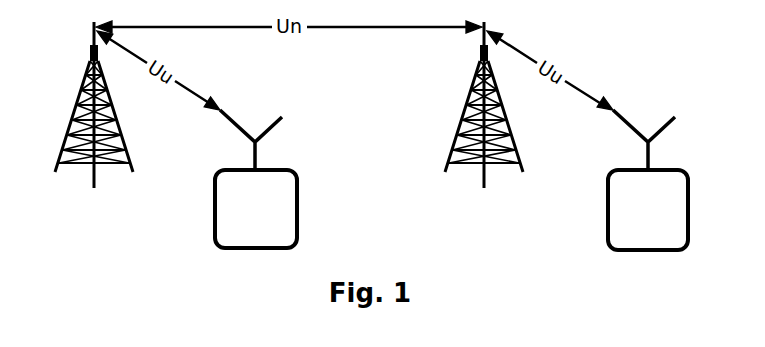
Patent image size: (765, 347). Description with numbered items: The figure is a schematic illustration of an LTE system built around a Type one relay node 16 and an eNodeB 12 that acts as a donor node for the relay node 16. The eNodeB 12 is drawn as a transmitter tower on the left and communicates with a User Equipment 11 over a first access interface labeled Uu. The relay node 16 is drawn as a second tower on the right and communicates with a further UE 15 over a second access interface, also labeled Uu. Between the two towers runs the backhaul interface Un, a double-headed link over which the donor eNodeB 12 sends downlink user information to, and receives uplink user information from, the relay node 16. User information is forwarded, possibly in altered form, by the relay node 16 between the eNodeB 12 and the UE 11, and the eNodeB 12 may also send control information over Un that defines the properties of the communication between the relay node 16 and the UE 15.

The User Equipment (UE) 11 is at (256, 179).
The eNodeB (eNB) 12 is at (94, 135).
The UE 15 is at (648, 180).
The relay node (RN) 16 is at (484, 135).